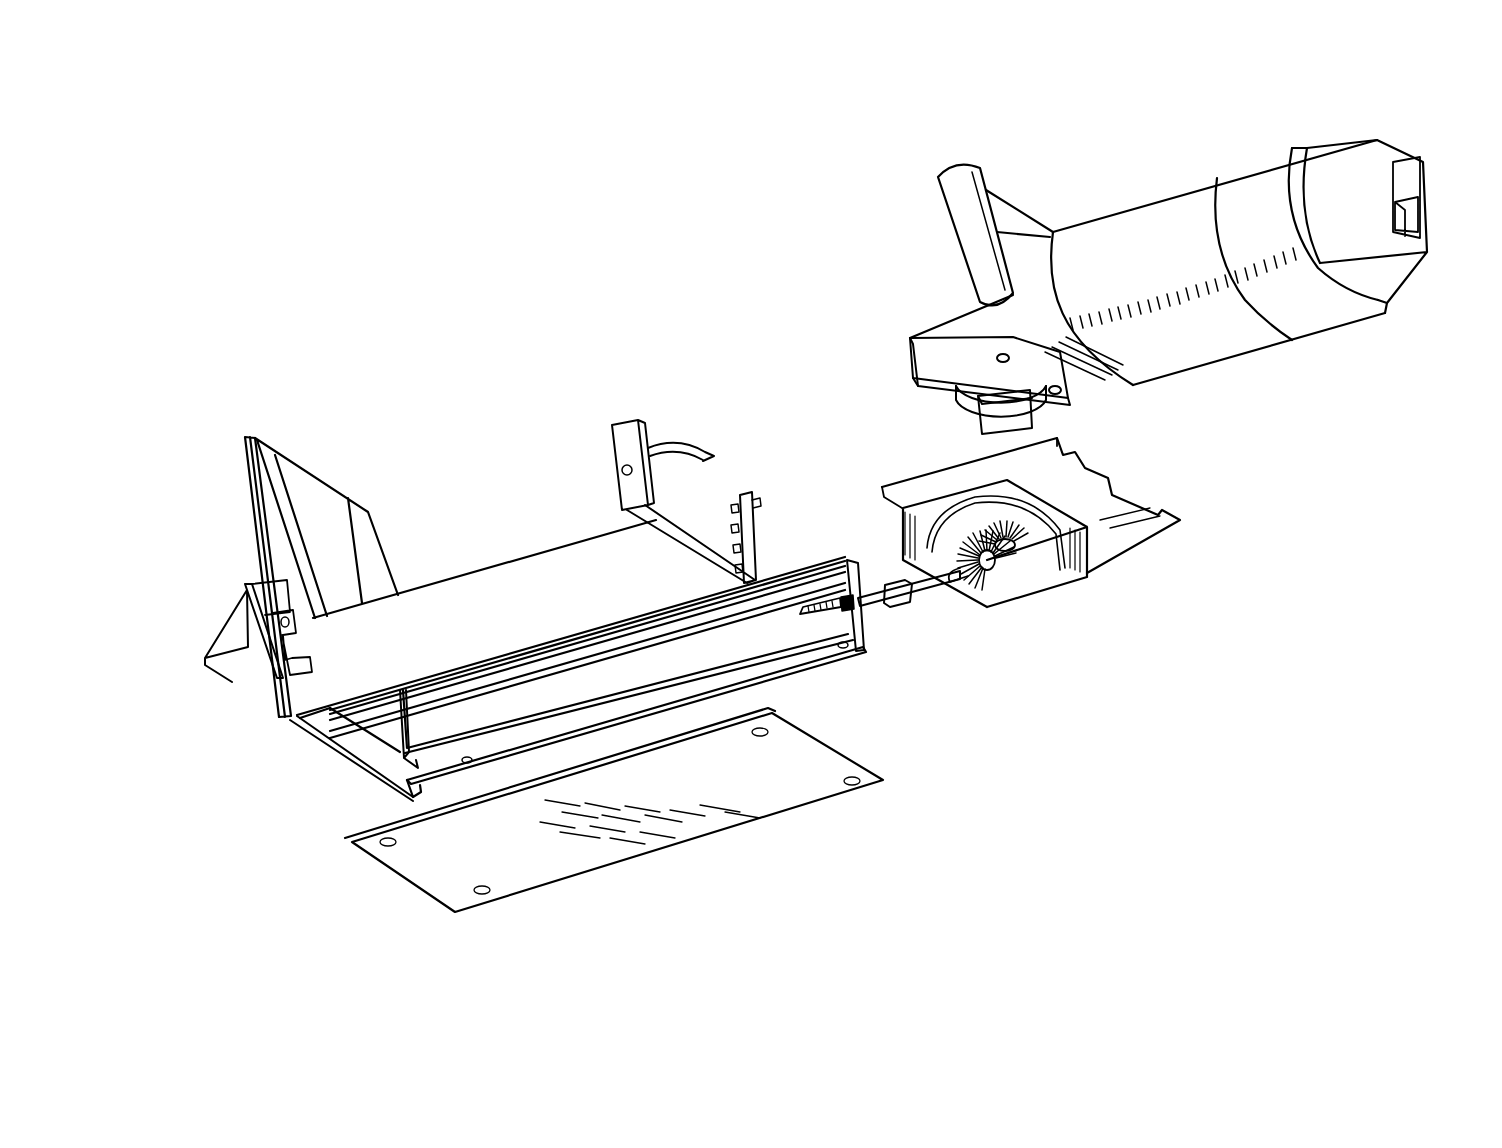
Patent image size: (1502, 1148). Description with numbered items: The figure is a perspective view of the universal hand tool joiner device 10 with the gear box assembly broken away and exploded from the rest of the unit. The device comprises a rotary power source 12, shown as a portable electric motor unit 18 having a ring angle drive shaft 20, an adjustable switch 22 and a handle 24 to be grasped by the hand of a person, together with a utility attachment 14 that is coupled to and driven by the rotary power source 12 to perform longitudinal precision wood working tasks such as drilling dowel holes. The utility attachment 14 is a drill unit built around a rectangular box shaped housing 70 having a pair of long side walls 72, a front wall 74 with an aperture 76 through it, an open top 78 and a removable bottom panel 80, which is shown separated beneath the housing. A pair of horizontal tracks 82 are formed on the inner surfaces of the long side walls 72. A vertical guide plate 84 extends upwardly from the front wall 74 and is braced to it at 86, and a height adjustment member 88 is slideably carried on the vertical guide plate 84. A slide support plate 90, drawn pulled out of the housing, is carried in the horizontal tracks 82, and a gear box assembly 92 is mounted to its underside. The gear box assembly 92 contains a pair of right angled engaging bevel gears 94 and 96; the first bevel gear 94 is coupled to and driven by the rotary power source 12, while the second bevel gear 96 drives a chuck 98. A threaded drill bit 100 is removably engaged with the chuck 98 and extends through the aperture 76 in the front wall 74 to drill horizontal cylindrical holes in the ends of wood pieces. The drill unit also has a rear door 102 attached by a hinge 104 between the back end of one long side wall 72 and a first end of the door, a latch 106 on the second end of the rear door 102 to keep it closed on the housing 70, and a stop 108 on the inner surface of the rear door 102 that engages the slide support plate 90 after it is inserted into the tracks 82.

The universal hand tool joiner device 10 is at (766, 284).
The rotary power source 12 is at (1088, 212).
The utility attachment 14 is at (502, 552).
The portable electric motor unit 18 is at (1162, 202).
The ring angle drive shaft 20 is at (984, 410).
The adjustable switch 22 is at (1420, 214).
The handle 24 is at (952, 203).
The housing 70 is at (850, 651).
The long side walls 72 is at (440, 590).
The front wall 74 is at (330, 735).
The aperture 76 is at (410, 733).
The open top 78 is at (558, 530).
The removable bottom panel 80 is at (818, 795).
The horizontal tracks 82 is at (790, 580).
The vertical guide plate 84 is at (335, 497).
The brace 86 is at (265, 450).
The height adjustment member 88 is at (236, 640).
The slide support plate 90 is at (1163, 530).
The gear box assembly 92 is at (1088, 561).
The first bevel gear 94 is at (1005, 535).
The second bevel gear 96 is at (997, 595).
The chuck 98 is at (883, 608).
The threaded drill bit 100 is at (807, 600).
The rear door 102 is at (626, 418).
The hinge 104 is at (748, 505).
The latch 106 is at (622, 470).
The stop 108 is at (710, 455).